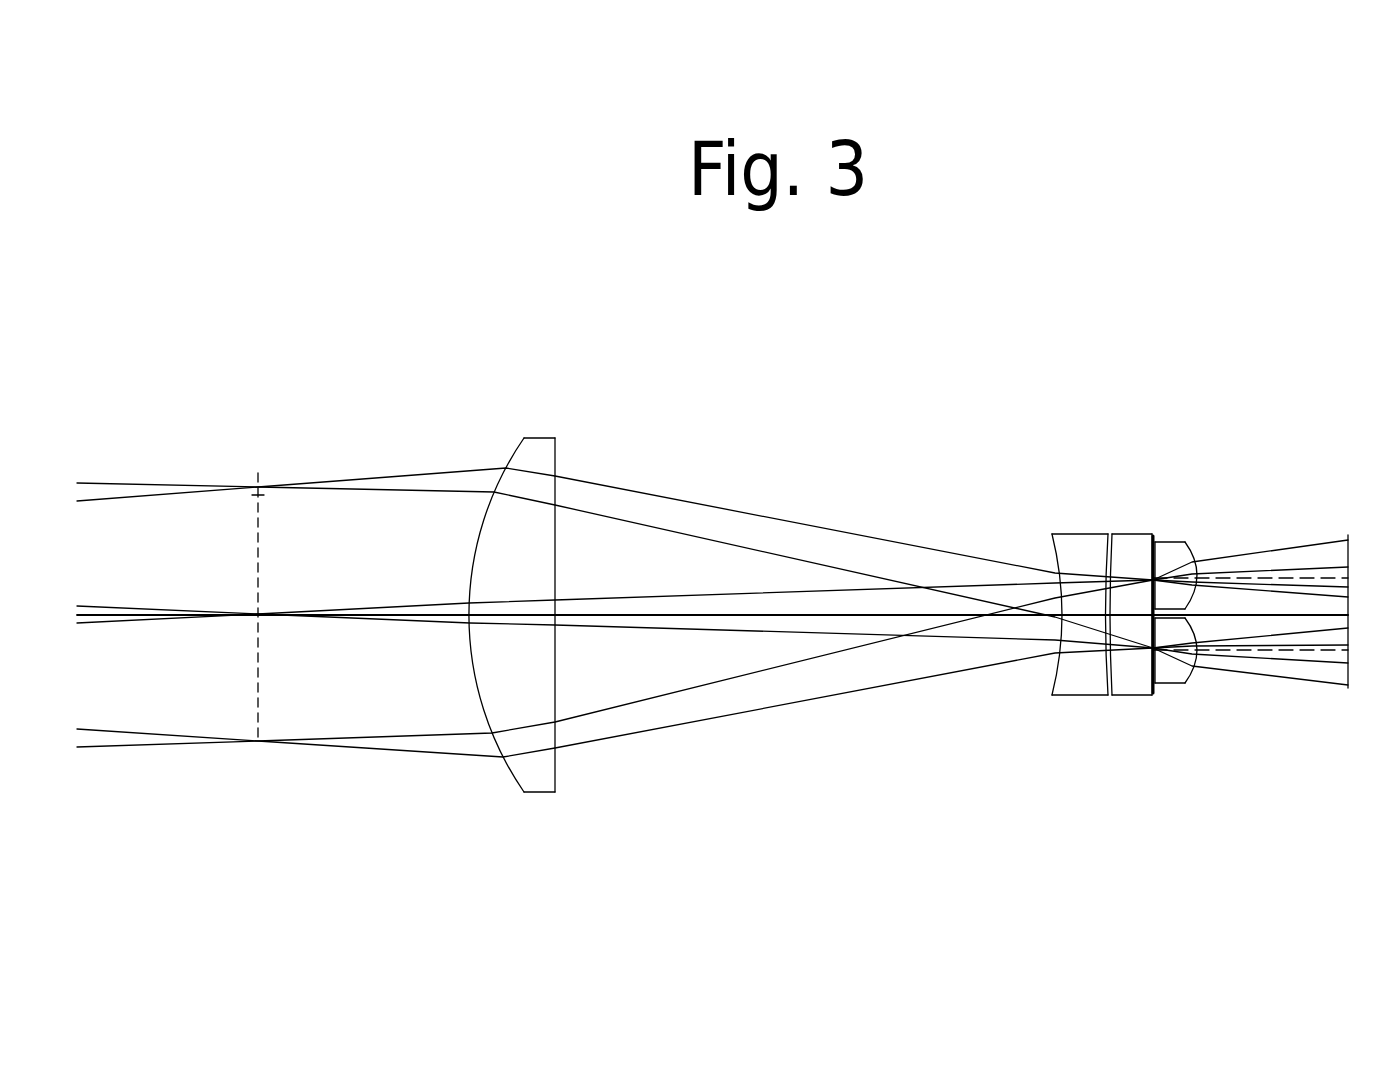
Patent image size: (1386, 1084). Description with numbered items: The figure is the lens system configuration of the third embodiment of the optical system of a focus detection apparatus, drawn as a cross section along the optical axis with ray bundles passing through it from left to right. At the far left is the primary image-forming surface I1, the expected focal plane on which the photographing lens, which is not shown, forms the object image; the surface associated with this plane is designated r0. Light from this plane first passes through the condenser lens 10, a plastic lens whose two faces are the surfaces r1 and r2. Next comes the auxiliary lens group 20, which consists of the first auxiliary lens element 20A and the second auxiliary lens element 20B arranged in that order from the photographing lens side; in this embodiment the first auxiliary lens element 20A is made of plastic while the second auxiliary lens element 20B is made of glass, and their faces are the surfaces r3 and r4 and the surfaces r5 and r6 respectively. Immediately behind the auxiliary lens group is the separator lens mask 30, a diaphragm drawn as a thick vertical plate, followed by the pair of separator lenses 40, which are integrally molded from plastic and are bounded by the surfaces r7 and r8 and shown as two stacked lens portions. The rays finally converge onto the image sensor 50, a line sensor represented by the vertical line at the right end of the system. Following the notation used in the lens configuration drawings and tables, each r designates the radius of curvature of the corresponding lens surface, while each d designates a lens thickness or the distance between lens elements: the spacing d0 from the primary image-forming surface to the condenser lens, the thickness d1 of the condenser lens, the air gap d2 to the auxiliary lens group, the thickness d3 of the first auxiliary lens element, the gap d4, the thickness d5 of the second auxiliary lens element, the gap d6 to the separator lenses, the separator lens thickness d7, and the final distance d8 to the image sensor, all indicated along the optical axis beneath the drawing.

The primary image-forming surface I1 is at (258, 473).
The lens surface radius of curvature r0 is at (272, 495).
The condenser lens 10 is at (528, 522).
The lens surface radius of curvature r1 is at (509, 458).
The lens surface radius of curvature r2 is at (556, 460).
The auxiliary lens group 20 is at (1061, 487).
The first auxiliary lens element 20A is at (1026, 516).
The second auxiliary lens element 20B is at (1142, 516).
The lens surface radius of curvature r3 is at (1053, 545).
The lens surface radius of curvature r4 is at (1100, 548).
The lens surface radius of curvature r5 is at (1113, 546).
The lens surface radius of curvature r6 is at (1153, 535).
The separator lens mask 30 is at (1155, 537).
The pair of separator lenses 40 is at (1221, 505).
The lens surface radius of curvature r7 is at (1162, 545).
The lens surface radius of curvature r8 is at (1188, 548).
The image sensor 50 is at (1348, 535).
The lens thickness or distance d0 is at (420, 617).
The lens thickness or distance d1 is at (521, 617).
The lens thickness or distance d2 is at (707, 617).
The lens thickness or distance d3 is at (1080, 617).
The lens thickness or distance d4 is at (1100, 617).
The lens thickness or distance d5 is at (1127, 617).
The lens thickness or distance d6 is at (1158, 617).
The lens thickness or distance d7 is at (1173, 617).
The lens thickness or distance d8 is at (1273, 617).